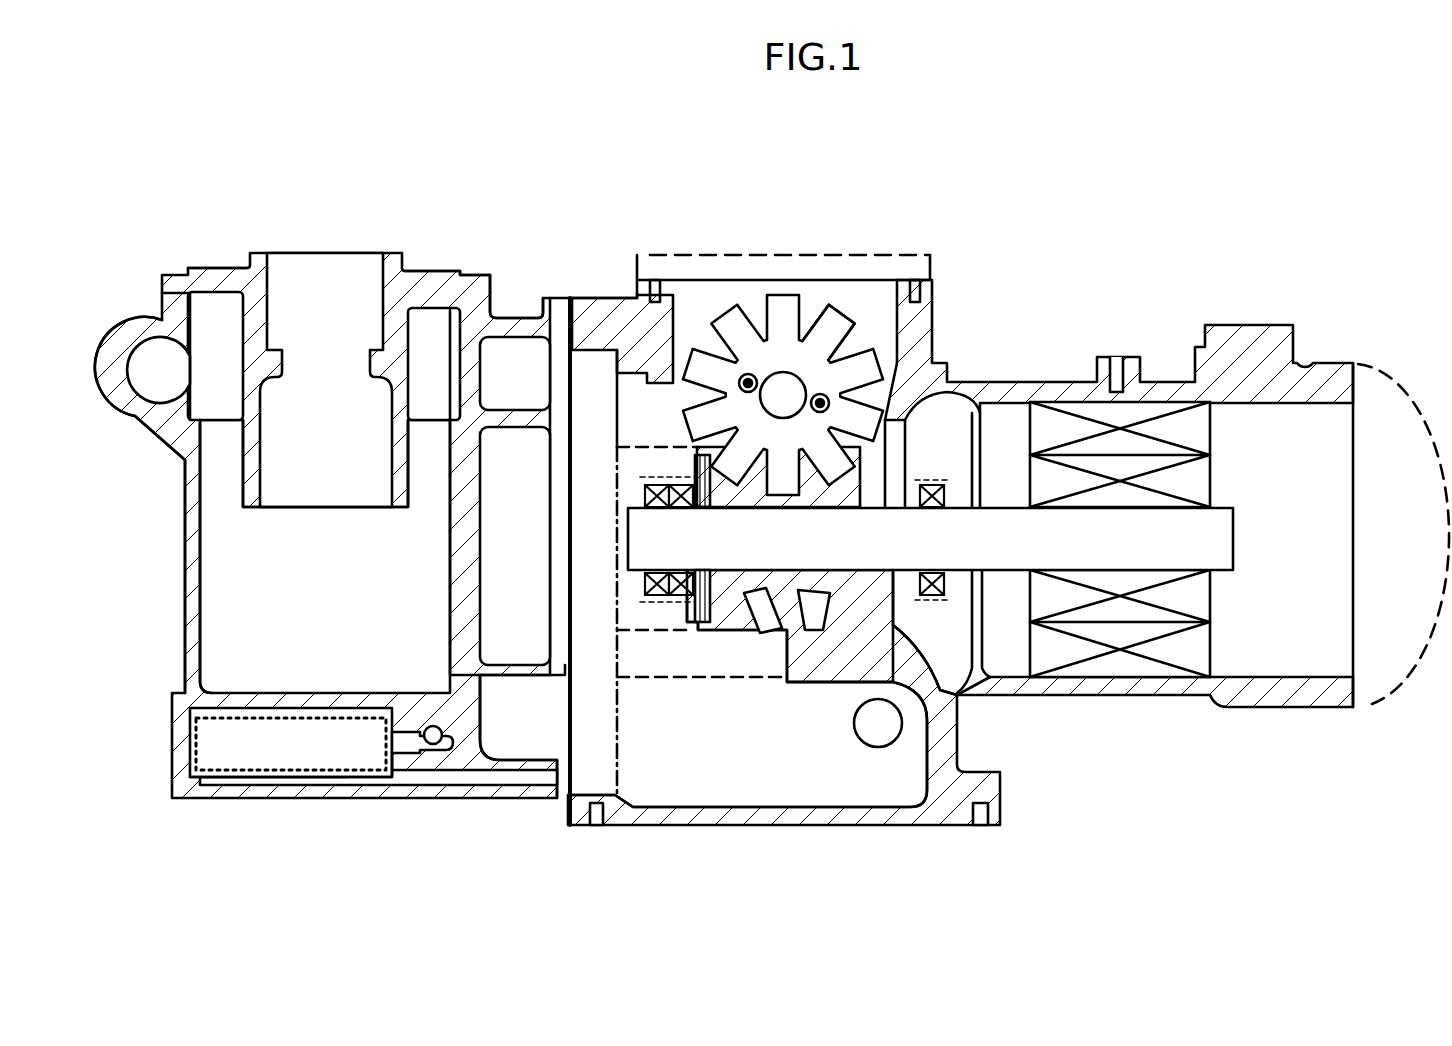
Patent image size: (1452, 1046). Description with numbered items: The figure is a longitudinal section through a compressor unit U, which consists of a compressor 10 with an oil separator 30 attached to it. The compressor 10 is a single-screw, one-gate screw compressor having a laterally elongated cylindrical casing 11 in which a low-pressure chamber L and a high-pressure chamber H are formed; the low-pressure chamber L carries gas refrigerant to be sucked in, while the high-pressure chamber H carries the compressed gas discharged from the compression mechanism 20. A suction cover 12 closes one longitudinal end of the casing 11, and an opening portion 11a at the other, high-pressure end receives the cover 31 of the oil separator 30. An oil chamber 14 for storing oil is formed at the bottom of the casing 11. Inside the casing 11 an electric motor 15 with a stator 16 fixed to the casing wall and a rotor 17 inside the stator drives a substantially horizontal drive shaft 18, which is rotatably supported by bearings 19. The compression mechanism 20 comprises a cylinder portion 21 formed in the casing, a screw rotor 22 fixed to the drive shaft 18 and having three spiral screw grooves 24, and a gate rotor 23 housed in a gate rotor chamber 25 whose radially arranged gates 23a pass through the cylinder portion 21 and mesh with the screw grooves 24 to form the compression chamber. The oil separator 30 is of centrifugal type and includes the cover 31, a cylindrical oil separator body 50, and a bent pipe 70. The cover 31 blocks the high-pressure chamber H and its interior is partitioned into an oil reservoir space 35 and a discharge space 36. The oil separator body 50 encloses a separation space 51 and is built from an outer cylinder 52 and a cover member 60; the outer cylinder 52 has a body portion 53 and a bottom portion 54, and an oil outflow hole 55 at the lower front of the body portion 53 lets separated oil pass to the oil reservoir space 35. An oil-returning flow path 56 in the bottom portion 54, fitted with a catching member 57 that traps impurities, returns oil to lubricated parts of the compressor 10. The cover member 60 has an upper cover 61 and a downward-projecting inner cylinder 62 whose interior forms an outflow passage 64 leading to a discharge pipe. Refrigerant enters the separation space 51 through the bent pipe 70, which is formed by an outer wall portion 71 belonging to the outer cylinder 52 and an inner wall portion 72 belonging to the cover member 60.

The compressor 10 is at (1075, 330).
The casing 11 is at (604, 296).
The opening portion 11a is at (563, 318).
The suction cover 12 is at (1410, 390).
The oil chamber 14 is at (769, 789).
The electric motor 15 is at (1143, 680).
The stator 16 is at (1211, 652).
The rotor 17 is at (1211, 597).
The drive shaft 18 is at (1236, 543).
The bearings 19 is at (660, 485).
The compression mechanism 20 is at (705, 660).
The cylinder portion 21 is at (820, 677).
The screw rotor 22 is at (740, 640).
The gate rotor 23 is at (784, 293).
The gates 23a is at (840, 312).
The screw grooves 24 is at (762, 622).
The gate rotor chamber 25 is at (715, 298).
The oil separator 30 is at (352, 203).
The cover 31 is at (510, 312).
The oil reservoir space 35 is at (523, 745).
The discharge space 36 is at (499, 506).
The oil separator body 50 is at (206, 260).
The separation space 51 is at (304, 570).
The outer cylinder 52 is at (183, 560).
The body portion 53 is at (187, 612).
The bottom portion 54 is at (474, 752).
The oil outflow hole 55 is at (467, 683).
The oil-returning flow path 56 is at (385, 779).
The catching member 57 is at (282, 772).
The cover member 60 is at (228, 262).
The upper cover 61 is at (440, 268).
The inner cylinder 62 is at (243, 488).
The outflow passage 64 is at (304, 456).
The bent pipe 70 is at (132, 315).
The outer wall portion 71 is at (120, 398).
The inner wall portion 72 is at (188, 398).
The high-pressure chamber H is at (607, 528).
The low-pressure chamber L is at (1290, 479).
The compressor unit U is at (1244, 264).